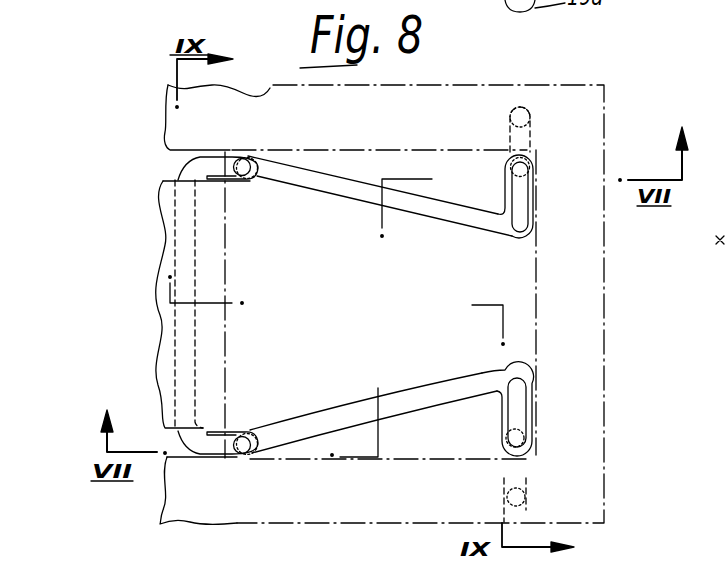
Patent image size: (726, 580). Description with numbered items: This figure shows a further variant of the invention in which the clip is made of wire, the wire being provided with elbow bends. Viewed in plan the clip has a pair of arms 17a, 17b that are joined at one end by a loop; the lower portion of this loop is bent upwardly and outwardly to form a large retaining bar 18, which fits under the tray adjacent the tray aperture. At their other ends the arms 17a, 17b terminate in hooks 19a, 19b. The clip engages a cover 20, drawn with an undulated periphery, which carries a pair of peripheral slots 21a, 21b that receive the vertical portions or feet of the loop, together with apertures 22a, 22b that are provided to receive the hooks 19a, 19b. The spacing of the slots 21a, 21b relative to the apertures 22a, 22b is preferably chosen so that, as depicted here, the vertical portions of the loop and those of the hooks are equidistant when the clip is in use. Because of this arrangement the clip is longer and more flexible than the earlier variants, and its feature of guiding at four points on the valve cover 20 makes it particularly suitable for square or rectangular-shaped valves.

The arm 17a is at (387, 207).
The arm 17b is at (398, 395).
The retaining bar 18 is at (187, 338).
The hook 19a is at (540, 133).
The hook 19b is at (525, 456).
The cover 20 is at (578, 115).
The peripheral slot 21a is at (207, 150).
The peripheral slot 21b is at (186, 454).
The aperture 22a is at (534, 200).
The aperture 22b is at (532, 395).